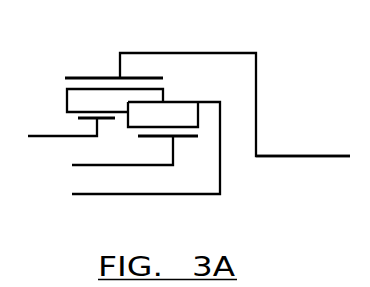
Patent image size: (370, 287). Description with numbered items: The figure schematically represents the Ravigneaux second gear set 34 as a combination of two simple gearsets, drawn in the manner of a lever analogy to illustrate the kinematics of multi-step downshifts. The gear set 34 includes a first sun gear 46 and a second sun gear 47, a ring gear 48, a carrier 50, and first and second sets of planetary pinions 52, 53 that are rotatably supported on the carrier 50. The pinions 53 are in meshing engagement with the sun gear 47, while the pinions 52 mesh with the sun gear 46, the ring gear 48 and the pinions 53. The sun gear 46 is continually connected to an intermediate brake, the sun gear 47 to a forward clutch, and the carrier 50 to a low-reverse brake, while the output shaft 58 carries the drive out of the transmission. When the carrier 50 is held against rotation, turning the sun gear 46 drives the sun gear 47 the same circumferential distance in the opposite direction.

The second gear set 34 is at (273, 89).
The ring gear 48 is at (82, 77).
The first set of planetary pinions 52 is at (72, 100).
The second set of planetary pinions 53 is at (177, 112).
The first sun gear 46 is at (60, 138).
The second sun gear 47 is at (137, 167).
The carrier 50 is at (118, 195).
The output shaft 58 is at (290, 156).